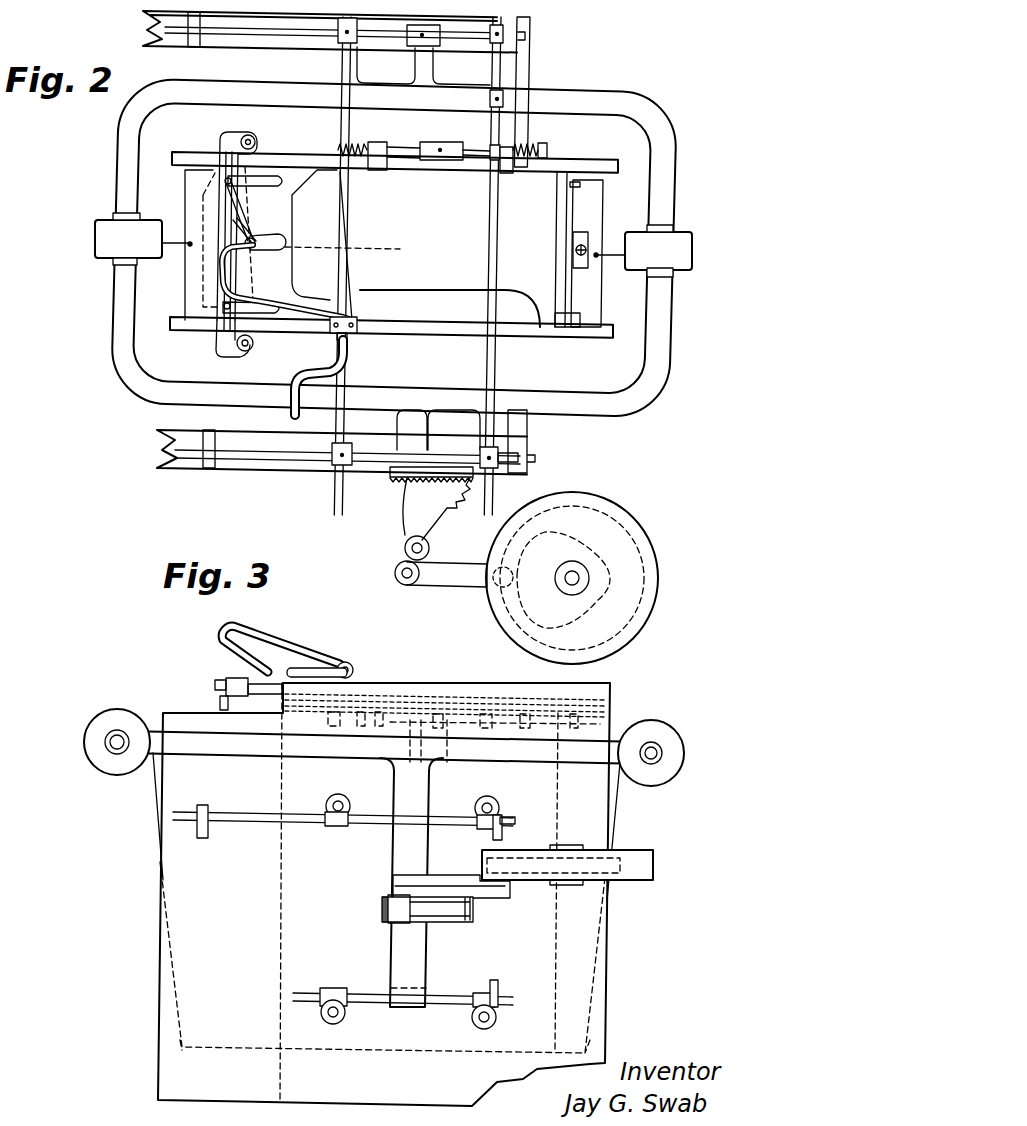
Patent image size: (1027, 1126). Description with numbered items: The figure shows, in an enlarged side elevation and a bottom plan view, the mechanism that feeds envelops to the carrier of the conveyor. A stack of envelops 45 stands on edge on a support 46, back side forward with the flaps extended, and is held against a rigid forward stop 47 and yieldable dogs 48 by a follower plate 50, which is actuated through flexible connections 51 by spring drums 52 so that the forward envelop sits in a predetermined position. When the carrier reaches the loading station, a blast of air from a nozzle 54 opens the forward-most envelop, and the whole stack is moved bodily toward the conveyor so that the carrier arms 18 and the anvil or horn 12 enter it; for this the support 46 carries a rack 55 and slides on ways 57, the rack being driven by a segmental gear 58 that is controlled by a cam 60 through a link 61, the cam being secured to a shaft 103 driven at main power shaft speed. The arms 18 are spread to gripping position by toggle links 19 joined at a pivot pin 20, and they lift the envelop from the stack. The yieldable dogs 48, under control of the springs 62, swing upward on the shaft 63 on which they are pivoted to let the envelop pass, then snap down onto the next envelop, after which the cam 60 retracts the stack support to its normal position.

In FIG. 2, the anvil or horn 12 is at (272, 238).
In FIG. 2, the arms 18 is at (270, 175).
In FIG. 2, the toggle links 19 is at (237, 214).
In FIG. 2, the pivot pin 20 is at (232, 243).
In FIG. 2, the stack of envelops 45 is at (522, 192).
In FIG. 2, the support 46 is at (657, 360).
In FIG. 2, the rigid forward stop 47 is at (473, 307).
In FIG. 2, the yieldable dogs 48 is at (497, 165).
In FIG. 3, the yieldable dogs 48 is at (498, 695).
In FIG. 2, the follower plate 50 is at (587, 210).
In FIG. 2, the flexible connections 51 is at (615, 260).
In FIG. 3, the flexible connections 51 is at (153, 787).
In FIG. 2, the spring drums 52 is at (690, 248).
In FIG. 3, the spring drums 52 is at (105, 765).
In FIG. 2, the nozzle 54 is at (285, 242).
In FIG. 3, the nozzle 54 is at (252, 658).
In FIG. 2, the rack 55 is at (455, 470).
In FIG. 3, the rack 55 is at (382, 907).
In FIG. 2, the ways 57 is at (473, 38).
In FIG. 2, the segmental gear 58 is at (445, 507).
In FIG. 3, the segmental gear 58 is at (437, 910).
In FIG. 2, the cam 60 is at (598, 512).
In FIG. 3, the cam 60 is at (640, 866).
In FIG. 2, the link 61 is at (452, 582).
In FIG. 3, the link 61 is at (450, 890).
In FIG. 2, the springs 62 is at (360, 147).
In FIG. 3, the springs 62 is at (343, 722).
In FIG. 2, the shaft 63 is at (477, 152).
In FIG. 2, the shaft 103 is at (575, 577).